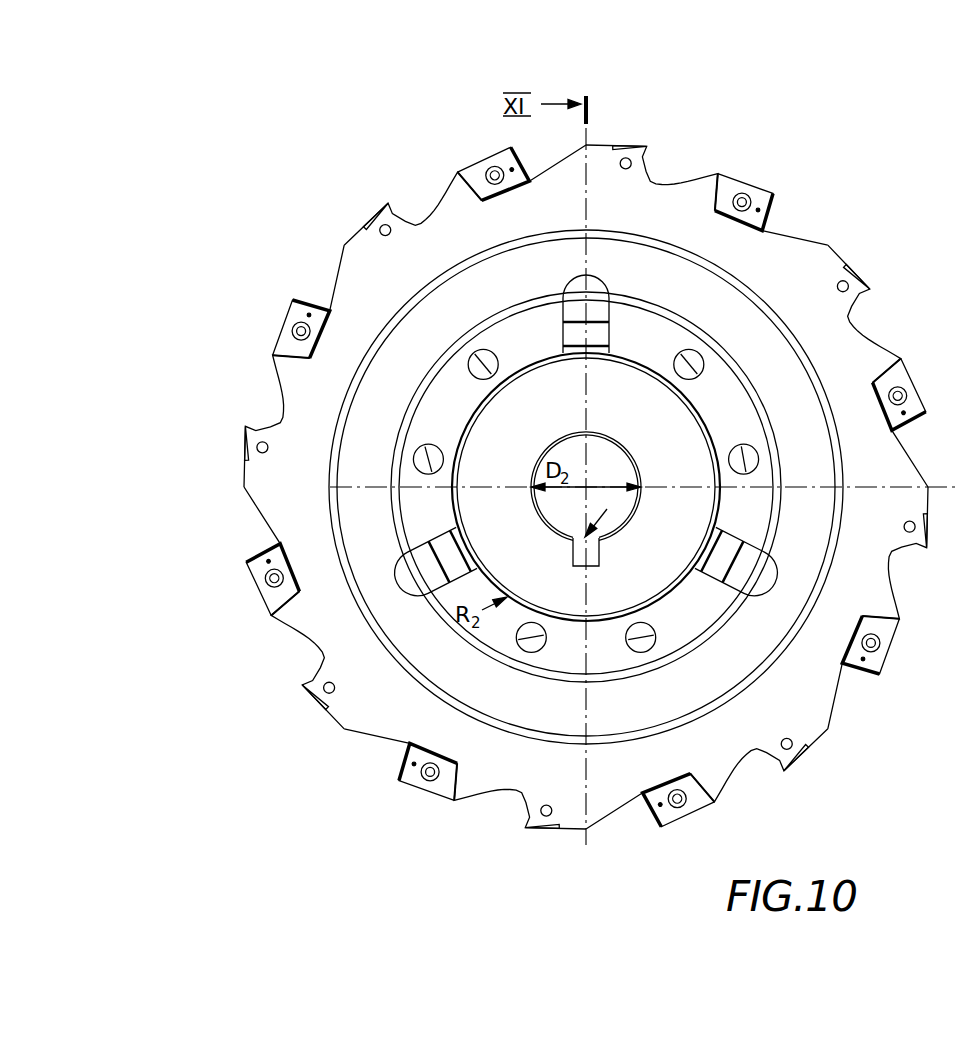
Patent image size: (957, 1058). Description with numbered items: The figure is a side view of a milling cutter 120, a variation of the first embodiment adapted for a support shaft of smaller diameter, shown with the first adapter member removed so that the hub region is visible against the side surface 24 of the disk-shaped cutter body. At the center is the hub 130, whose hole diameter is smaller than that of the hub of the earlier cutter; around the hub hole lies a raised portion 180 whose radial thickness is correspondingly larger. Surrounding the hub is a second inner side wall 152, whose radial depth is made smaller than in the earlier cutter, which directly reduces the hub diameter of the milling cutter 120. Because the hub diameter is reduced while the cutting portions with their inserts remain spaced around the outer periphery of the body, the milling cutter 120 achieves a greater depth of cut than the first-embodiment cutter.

The milling cutter 120 is at (343, 158).
The first side surface 24 is at (280, 483).
The hub 130 is at (445, 571).
The raised portion 180 is at (490, 574).
The second inner side wall 152 is at (696, 364).